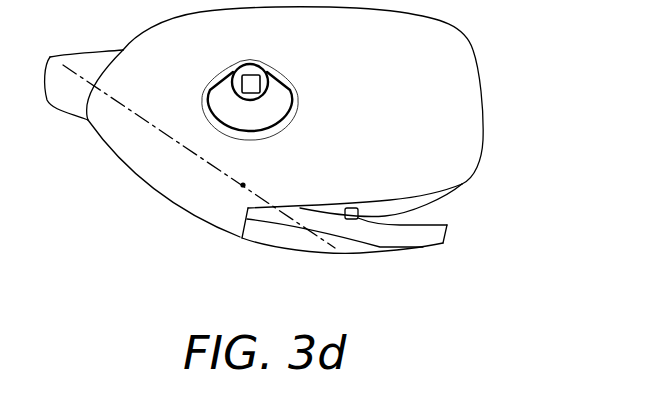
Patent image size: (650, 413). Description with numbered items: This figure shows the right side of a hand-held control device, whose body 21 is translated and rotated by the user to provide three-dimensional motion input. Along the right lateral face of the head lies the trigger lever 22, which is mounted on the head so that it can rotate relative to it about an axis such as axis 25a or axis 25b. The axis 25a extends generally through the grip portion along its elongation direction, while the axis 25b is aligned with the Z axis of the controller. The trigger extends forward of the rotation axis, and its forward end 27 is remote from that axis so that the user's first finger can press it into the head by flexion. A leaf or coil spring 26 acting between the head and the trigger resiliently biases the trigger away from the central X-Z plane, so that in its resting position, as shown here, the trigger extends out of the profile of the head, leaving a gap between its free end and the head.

The body 21 is at (157, 180).
The trigger lever 22 is at (265, 242).
The axis 25a is at (71, 72).
The axis 25b is at (241, 187).
The spring 26 is at (351, 207).
The forward end 27 is at (412, 250).